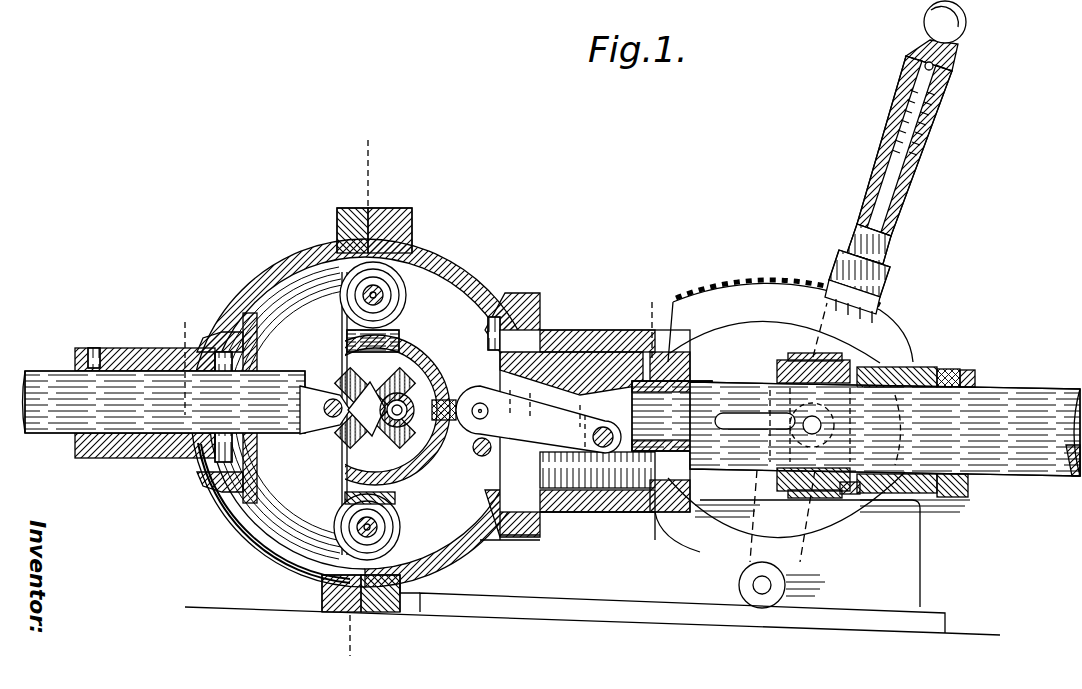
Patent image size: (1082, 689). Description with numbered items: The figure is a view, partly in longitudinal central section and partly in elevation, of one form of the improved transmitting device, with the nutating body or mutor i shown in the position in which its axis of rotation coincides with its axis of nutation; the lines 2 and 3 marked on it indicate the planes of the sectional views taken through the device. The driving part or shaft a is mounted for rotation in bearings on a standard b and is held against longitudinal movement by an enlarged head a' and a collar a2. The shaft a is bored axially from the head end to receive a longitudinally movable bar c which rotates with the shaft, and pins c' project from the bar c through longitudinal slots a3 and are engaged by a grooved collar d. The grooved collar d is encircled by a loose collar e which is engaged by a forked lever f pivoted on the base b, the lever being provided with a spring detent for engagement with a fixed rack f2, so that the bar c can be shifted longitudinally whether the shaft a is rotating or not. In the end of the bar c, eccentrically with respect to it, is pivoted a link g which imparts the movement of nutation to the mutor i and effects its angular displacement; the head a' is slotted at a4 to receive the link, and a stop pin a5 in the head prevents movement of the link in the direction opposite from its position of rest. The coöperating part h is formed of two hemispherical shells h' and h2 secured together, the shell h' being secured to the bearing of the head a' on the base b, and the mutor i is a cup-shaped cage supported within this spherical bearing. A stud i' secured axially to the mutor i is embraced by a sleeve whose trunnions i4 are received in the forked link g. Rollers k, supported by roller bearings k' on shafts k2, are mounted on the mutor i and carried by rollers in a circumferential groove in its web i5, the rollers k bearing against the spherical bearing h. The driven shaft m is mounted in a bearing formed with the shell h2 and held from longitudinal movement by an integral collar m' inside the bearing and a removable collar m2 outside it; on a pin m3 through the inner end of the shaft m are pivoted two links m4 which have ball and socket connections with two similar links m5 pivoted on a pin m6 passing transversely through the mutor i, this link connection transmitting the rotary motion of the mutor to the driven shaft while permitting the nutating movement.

The coöperating part h is at (365, 413).
The hemispherical shell h' is at (493, 289).
The hemispherical shell h2 is at (292, 270).
The rollers k is at (377, 553).
The roller bearings k' is at (345, 568).
The shafts k2 is at (390, 547).
The nutating body or mutor i is at (395, 316).
The stud i' is at (382, 410).
The trunnions i4 is at (561, 420).
The web i5 is at (396, 497).
The driven part or shaft m is at (163, 387).
The integral collar m' is at (204, 412).
The removable collar m2 is at (105, 448).
The pin m3 is at (318, 430).
The links m4 is at (345, 398).
The links m5 is at (397, 390).
The pin m6 is at (397, 428).
The driving part or shaft a is at (885, 429).
The enlarged head a' is at (595, 406).
The collar a2 is at (955, 378).
The longitudinal slots a3 is at (738, 420).
The slot a4 is at (583, 475).
The stop pin a5 is at (474, 450).
The standard b is at (592, 567).
The longitudinally movable bar c is at (672, 416).
The pins c' is at (835, 426).
The grooved collar d is at (856, 494).
The loose collar e is at (796, 500).
The forked lever f is at (842, 345).
The fixed rack f2 is at (800, 284).
The link g is at (538, 419).
The section line 2 is at (330, 150).
The section line 3 is at (185, 270).